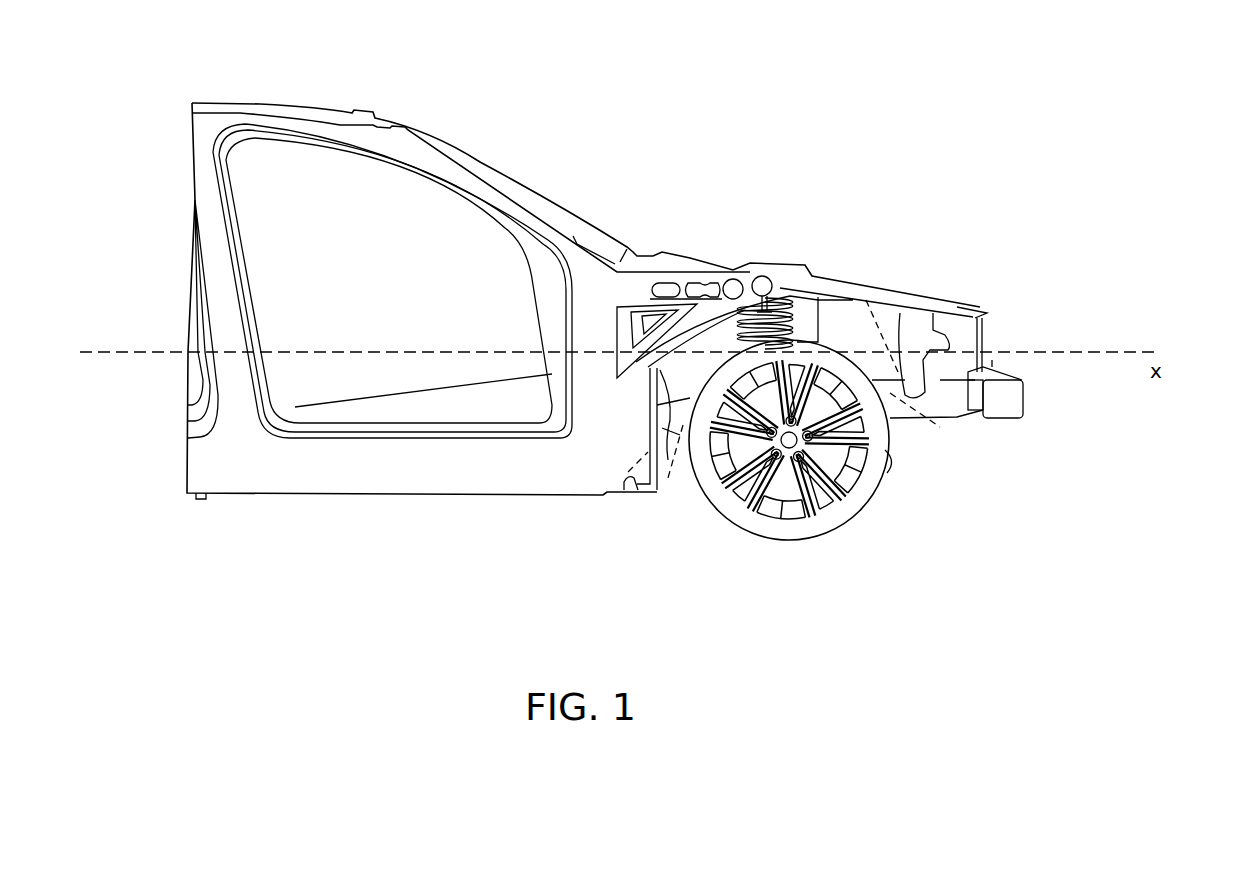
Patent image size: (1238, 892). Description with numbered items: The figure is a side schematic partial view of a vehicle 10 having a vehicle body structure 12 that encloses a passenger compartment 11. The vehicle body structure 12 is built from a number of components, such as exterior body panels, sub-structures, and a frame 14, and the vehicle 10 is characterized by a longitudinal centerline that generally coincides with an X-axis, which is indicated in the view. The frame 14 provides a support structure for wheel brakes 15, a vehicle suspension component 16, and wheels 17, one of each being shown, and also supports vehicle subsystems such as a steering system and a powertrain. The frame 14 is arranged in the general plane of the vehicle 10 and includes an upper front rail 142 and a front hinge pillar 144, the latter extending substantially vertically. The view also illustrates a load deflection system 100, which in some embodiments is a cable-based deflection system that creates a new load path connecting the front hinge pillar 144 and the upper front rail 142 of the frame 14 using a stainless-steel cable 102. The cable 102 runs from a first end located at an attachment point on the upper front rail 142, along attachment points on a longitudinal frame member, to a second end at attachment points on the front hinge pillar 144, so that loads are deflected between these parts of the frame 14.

The vehicle 10 is at (458, 92).
The passenger compartment 11 is at (459, 297).
The vehicle body structure 12 is at (616, 196).
The frame 14 is at (768, 178).
The upper front rail 142 is at (753, 297).
The vehicle suspension component 16 is at (770, 305).
The cable 102 is at (866, 300).
The front hinge pillar 144 is at (624, 488).
The wheel brakes 15 is at (780, 497).
The wheels 17 is at (847, 497).
The load deflection system 100 is at (951, 470).